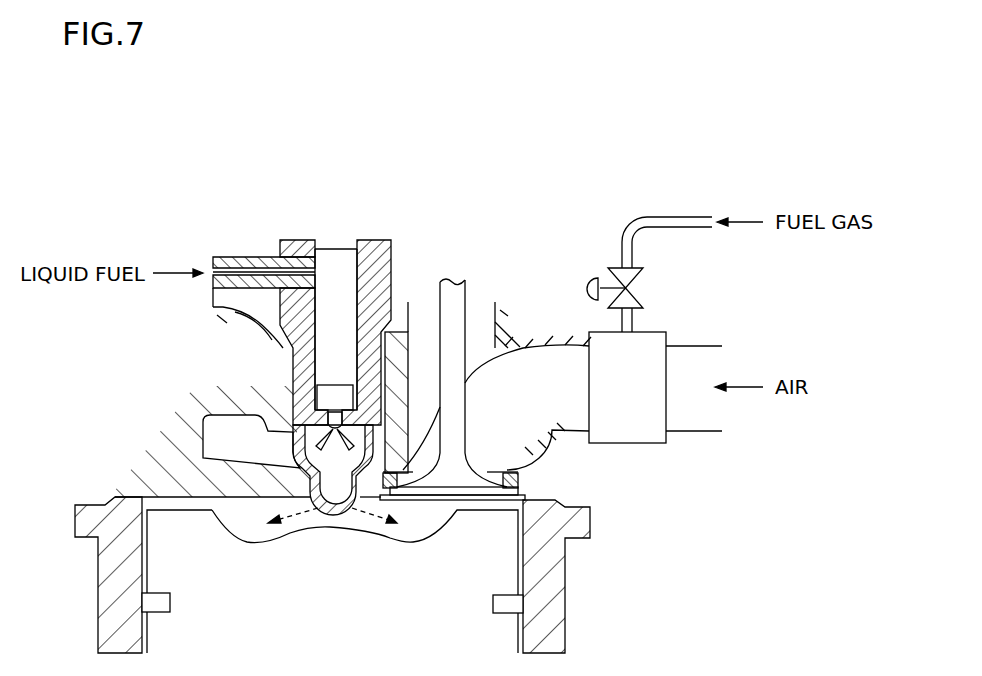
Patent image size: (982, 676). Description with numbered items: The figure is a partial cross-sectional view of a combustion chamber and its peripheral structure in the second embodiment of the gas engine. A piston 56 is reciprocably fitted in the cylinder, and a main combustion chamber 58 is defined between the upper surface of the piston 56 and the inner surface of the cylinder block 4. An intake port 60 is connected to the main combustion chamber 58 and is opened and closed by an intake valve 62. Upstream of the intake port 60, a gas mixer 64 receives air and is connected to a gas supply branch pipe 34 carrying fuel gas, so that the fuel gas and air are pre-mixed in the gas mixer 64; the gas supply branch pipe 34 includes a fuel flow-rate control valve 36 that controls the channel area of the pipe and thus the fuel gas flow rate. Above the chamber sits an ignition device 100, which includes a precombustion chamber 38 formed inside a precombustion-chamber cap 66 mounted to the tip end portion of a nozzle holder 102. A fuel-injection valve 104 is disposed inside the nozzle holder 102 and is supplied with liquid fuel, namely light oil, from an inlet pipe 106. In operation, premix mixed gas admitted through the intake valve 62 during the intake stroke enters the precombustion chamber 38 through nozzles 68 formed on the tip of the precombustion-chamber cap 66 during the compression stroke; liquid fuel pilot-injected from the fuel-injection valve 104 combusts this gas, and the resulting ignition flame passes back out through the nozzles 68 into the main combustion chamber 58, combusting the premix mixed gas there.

The cylinder block 4 is at (567, 572).
The gas supply branch pipe 34 is at (678, 215).
The fuel flow-rate control valve 36 is at (642, 275).
The precombustion chamber 38 is at (318, 440).
The piston 56 is at (158, 632).
The main combustion chamber 58 is at (137, 493).
The intake port 60 is at (533, 373).
The intake valve 62 is at (457, 300).
The gas mixer 64 is at (667, 333).
The precombustion-chamber cap 66 is at (330, 520).
The nozzles 68 is at (307, 505).
The ignition device 100 is at (391, 242).
The nozzle holder 102 is at (386, 283).
The fuel-injection valve 104 is at (335, 268).
The inlet pipe of the liquid fuel 106 is at (214, 255).